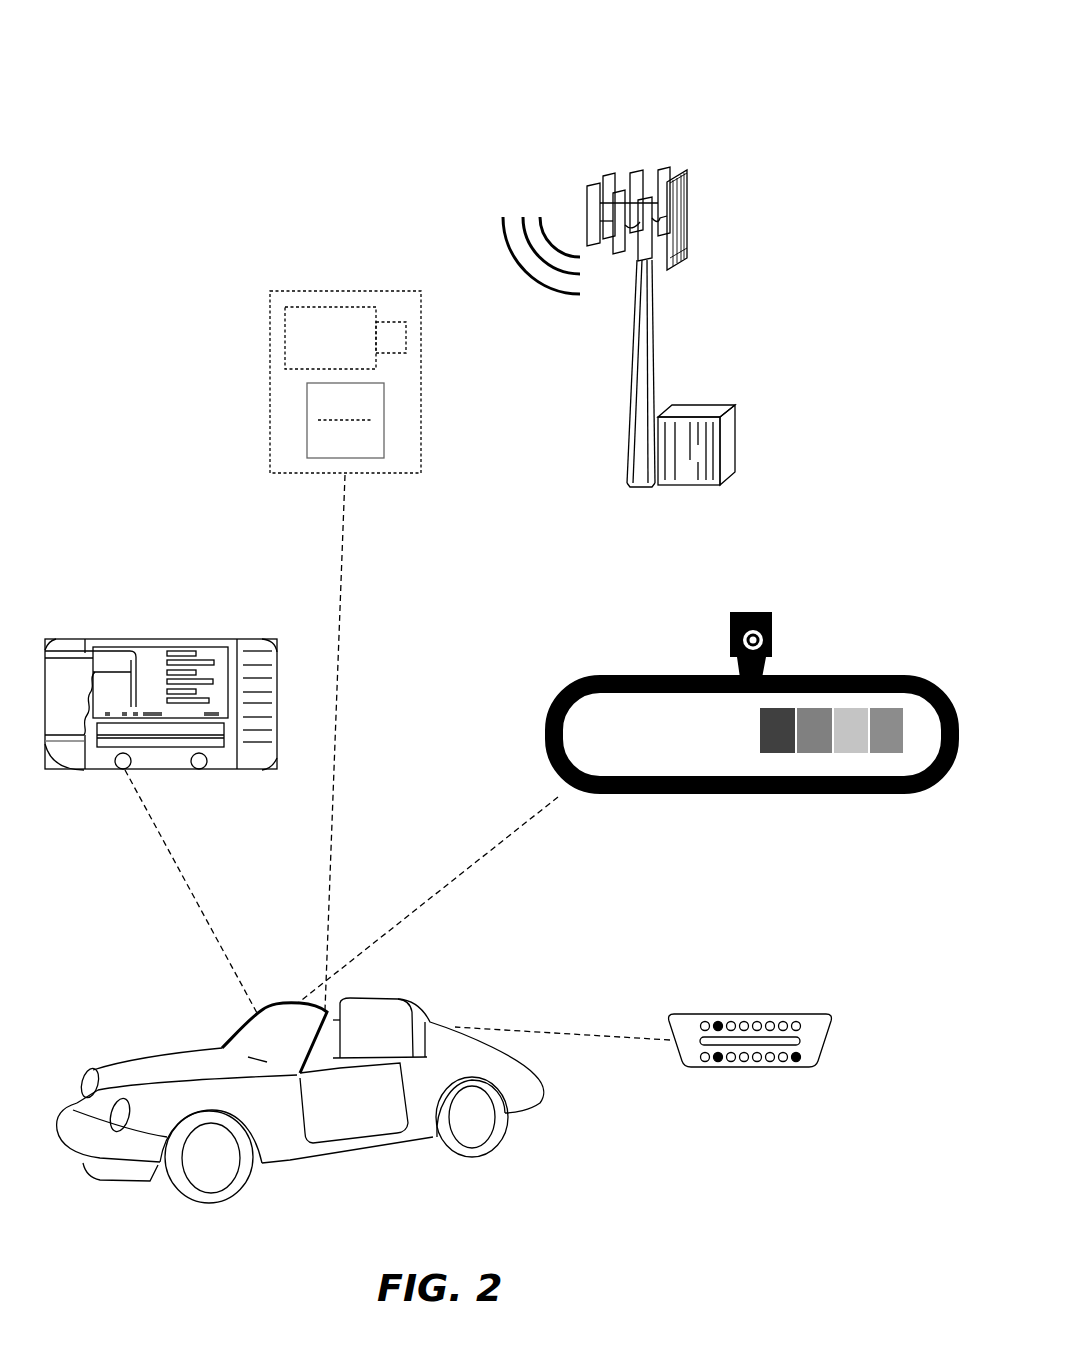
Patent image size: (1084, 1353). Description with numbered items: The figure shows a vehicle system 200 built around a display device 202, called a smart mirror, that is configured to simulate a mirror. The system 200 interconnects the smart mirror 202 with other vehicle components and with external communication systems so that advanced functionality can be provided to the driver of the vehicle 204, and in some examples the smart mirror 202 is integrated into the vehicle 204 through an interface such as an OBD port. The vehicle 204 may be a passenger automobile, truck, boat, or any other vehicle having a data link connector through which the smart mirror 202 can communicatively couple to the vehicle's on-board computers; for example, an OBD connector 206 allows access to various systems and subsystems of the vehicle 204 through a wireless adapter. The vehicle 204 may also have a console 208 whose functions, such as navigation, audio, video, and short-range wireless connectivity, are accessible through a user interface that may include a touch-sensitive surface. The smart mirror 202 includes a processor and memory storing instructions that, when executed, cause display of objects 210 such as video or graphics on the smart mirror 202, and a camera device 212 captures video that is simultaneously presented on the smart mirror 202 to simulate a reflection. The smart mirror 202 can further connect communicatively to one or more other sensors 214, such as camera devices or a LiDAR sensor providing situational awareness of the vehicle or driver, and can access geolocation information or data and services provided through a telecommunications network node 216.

The vehicle system 200 is at (845, 58).
The display device 202 is at (660, 794).
The vehicle 204 is at (379, 998).
The OBD connector 206 is at (806, 1012).
The console 208 is at (156, 639).
The objects 210 is at (851, 762).
The camera device 212 is at (772, 623).
The sensors 214 is at (318, 291).
The telecommunications network node 216 is at (688, 186).